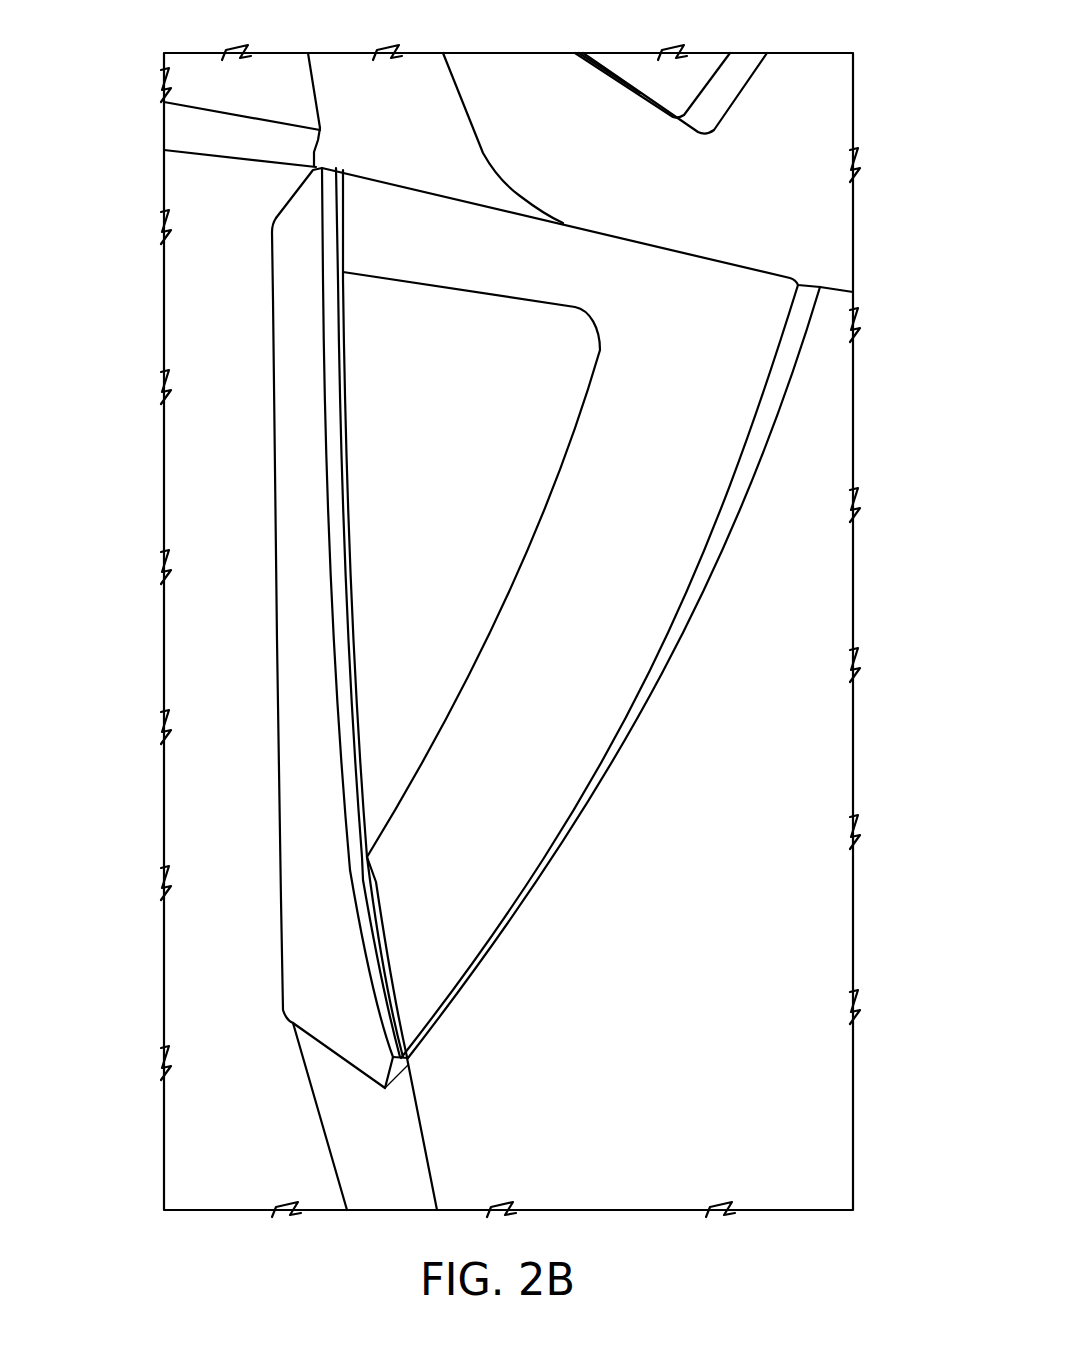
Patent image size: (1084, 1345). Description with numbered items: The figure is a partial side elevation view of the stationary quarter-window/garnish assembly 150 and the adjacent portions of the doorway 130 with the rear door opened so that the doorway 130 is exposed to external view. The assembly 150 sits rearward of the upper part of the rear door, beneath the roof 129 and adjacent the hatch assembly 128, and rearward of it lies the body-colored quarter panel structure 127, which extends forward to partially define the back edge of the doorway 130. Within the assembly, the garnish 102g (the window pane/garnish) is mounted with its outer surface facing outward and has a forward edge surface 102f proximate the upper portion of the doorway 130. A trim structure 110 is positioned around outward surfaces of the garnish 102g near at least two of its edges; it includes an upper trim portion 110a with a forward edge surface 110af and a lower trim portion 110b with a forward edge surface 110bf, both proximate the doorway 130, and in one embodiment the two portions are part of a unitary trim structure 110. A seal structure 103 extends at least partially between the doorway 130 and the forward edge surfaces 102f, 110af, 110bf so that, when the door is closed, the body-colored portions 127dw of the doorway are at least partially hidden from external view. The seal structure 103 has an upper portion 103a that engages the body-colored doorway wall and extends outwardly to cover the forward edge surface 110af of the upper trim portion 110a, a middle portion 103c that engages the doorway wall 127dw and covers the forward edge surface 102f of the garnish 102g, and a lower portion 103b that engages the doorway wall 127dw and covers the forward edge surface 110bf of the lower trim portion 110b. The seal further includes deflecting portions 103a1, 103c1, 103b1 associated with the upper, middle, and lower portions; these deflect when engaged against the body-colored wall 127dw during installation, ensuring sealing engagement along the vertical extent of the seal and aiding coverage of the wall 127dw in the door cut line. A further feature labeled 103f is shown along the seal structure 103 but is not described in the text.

The stationary quarter window/garnish assembly 150 is at (146, 35).
The quarter panel structure 127 is at (840, 887).
The body-colored doorway wall 127dw is at (253, 263).
The hatch assembly 128 is at (718, 105).
The vehicle roof 129 is at (164, 82).
The doorway 130 is at (197, 204).
The seal structure 103 is at (287, 807).
The upper seal portion 103a is at (306, 227).
The upper deflecting portion 103a1 is at (278, 246).
The middle seal portion 103c is at (313, 613).
The middle deflecting portion 103c1 is at (287, 675).
The lower seal portion 103b is at (345, 993).
The lower deflecting portion 103b1 is at (295, 1003).
The pillar flange 103f is at (300, 543).
The garnish 102g is at (526, 527).
The forward edge surface of window/garnish 102f is at (345, 378).
The trim structure 110 is at (737, 263).
The upper trim portion 110a is at (543, 263).
The lower trim portion 110b is at (568, 742).
The forward edge surface of upper trim portion 110af is at (337, 210).
The forward edge surface of lower trim portion 110bf is at (383, 963).